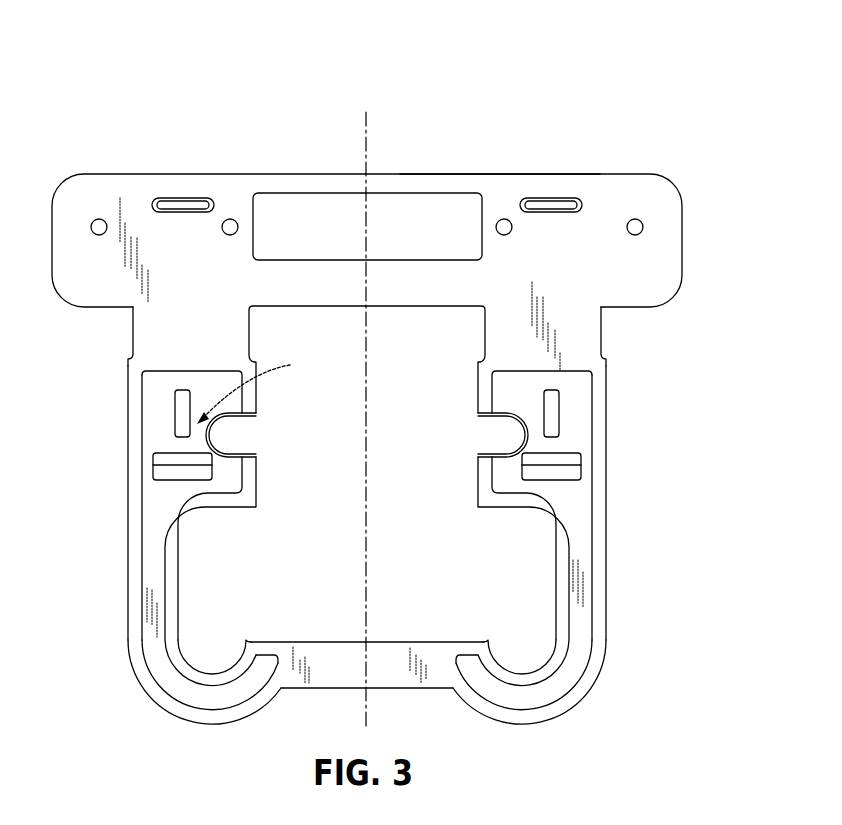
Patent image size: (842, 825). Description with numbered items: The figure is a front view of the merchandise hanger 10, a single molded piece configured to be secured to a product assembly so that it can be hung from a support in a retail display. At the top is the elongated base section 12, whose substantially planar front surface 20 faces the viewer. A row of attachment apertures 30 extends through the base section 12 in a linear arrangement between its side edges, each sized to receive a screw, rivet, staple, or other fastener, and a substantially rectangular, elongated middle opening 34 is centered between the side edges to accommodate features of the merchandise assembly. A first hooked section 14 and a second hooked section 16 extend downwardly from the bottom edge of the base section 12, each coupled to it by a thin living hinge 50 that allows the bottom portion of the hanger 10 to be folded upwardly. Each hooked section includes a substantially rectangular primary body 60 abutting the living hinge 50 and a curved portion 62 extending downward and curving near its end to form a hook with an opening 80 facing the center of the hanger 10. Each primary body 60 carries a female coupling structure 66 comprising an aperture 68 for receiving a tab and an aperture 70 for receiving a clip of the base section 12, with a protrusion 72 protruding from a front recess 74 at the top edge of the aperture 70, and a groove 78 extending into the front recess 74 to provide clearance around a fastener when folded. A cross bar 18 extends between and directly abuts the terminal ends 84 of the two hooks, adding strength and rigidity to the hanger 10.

The merchandise hanger 10 is at (137, 74).
The base section 12 is at (672, 213).
The first hooked section 14 is at (148, 545).
The second hooked section 16 is at (582, 512).
The cross bar 18 is at (388, 645).
The front surface 20 is at (464, 183).
The attachment apertures 30 is at (504, 219).
The middle opening 34 is at (254, 212).
The living hinge 50 is at (148, 323).
The primary body 60 is at (152, 420).
The curved portion 62 is at (163, 642).
The female coupling structure 66 is at (259, 386).
The aperture 68 is at (180, 400).
The aperture 70 is at (155, 473).
The protrusion 72 is at (163, 458).
The front recess 74 is at (158, 570).
The groove 78 is at (238, 448).
The opening 80 is at (247, 640).
The terminal ends 84 is at (253, 680).